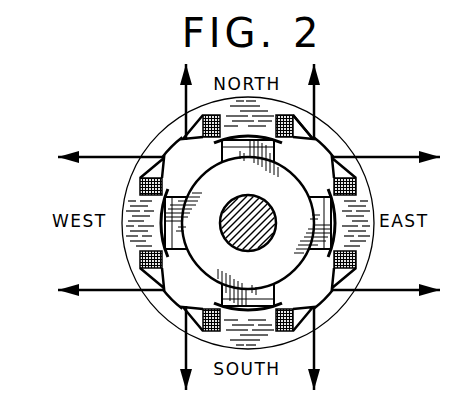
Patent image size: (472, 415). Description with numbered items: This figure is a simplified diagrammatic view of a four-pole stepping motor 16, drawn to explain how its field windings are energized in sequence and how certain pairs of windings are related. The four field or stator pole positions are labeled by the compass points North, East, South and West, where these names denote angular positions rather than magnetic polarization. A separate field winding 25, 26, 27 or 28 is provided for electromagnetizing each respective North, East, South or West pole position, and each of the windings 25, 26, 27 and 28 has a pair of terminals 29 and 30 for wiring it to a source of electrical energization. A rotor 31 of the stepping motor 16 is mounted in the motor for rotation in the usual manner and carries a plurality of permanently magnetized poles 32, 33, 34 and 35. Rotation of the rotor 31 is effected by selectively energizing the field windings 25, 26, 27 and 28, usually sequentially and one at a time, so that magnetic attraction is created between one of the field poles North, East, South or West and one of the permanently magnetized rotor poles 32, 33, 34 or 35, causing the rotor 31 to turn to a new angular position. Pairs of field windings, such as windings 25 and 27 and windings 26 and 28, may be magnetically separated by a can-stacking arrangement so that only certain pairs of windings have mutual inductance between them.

The stepping motor 16 is at (113, 136).
The field winding 25 is at (303, 108).
The field winding 26 is at (348, 260).
The field winding 27 is at (290, 328).
The field winding 28 is at (151, 265).
The terminal 29 is at (183, 97).
The terminal 30 is at (305, 118).
The rotor 31 is at (258, 187).
The permanently magnetized pole 32 is at (222, 147).
The permanently magnetized pole 33 is at (312, 188).
The permanently magnetized pole 34 is at (253, 291).
The permanently magnetized pole 35 is at (176, 238).